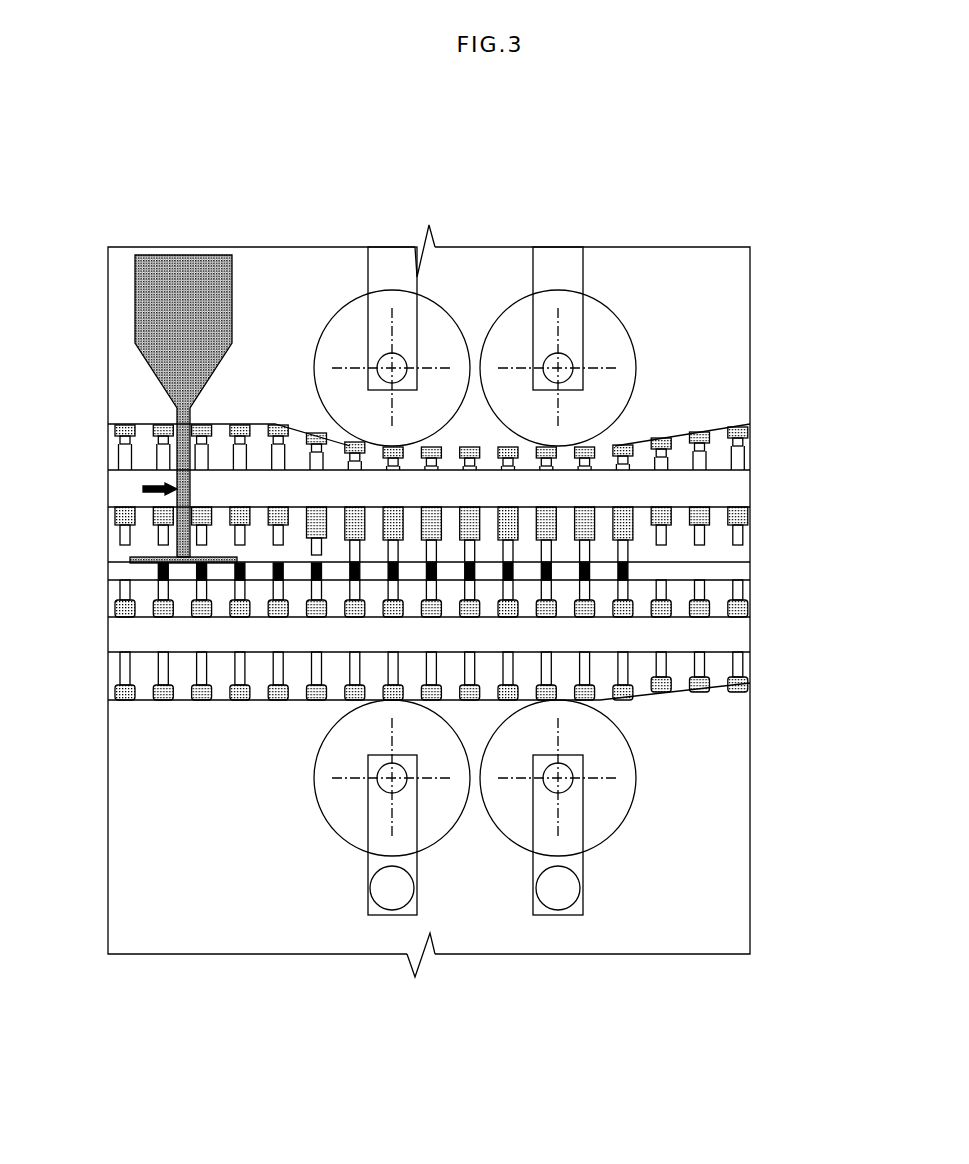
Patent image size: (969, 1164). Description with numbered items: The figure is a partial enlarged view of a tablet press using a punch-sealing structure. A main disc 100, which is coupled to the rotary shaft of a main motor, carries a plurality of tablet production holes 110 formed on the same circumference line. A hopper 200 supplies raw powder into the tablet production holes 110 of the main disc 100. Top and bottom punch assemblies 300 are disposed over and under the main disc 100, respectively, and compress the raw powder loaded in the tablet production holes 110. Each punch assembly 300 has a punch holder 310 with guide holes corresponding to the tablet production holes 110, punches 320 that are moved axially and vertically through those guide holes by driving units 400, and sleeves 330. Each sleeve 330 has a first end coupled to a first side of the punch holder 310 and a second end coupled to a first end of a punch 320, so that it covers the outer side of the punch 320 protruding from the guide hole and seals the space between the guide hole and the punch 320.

The main disc 100 is at (116, 571).
The tablet production holes 110 is at (130, 559).
The hopper 200 is at (195, 260).
The top and bottom punch assemblies 300 is at (830, 449).
The punch holder 310 is at (742, 487).
The punches 320 is at (742, 455).
The sleeves 330 is at (740, 517).
The driving units 400 is at (425, 357).